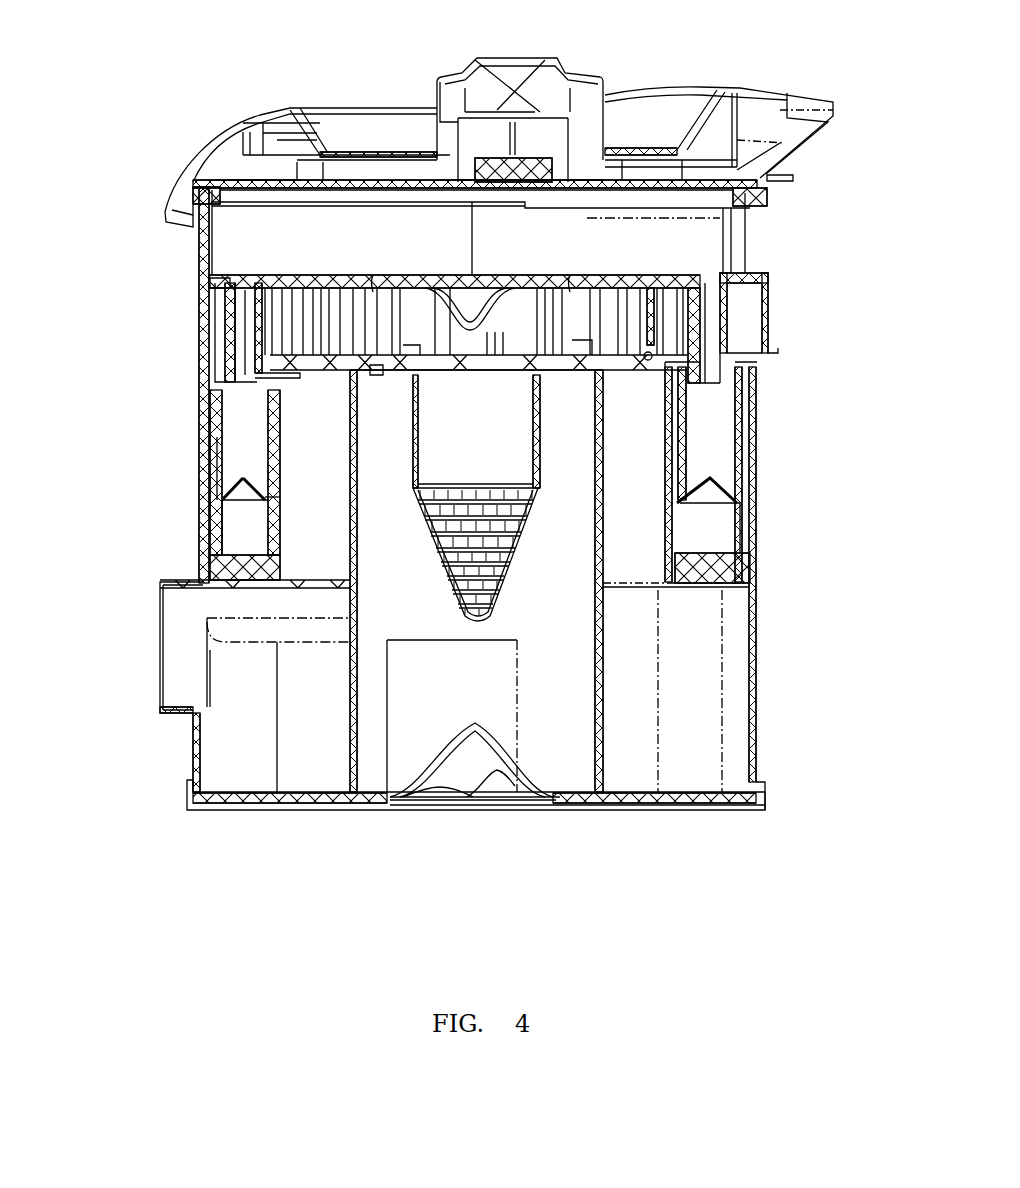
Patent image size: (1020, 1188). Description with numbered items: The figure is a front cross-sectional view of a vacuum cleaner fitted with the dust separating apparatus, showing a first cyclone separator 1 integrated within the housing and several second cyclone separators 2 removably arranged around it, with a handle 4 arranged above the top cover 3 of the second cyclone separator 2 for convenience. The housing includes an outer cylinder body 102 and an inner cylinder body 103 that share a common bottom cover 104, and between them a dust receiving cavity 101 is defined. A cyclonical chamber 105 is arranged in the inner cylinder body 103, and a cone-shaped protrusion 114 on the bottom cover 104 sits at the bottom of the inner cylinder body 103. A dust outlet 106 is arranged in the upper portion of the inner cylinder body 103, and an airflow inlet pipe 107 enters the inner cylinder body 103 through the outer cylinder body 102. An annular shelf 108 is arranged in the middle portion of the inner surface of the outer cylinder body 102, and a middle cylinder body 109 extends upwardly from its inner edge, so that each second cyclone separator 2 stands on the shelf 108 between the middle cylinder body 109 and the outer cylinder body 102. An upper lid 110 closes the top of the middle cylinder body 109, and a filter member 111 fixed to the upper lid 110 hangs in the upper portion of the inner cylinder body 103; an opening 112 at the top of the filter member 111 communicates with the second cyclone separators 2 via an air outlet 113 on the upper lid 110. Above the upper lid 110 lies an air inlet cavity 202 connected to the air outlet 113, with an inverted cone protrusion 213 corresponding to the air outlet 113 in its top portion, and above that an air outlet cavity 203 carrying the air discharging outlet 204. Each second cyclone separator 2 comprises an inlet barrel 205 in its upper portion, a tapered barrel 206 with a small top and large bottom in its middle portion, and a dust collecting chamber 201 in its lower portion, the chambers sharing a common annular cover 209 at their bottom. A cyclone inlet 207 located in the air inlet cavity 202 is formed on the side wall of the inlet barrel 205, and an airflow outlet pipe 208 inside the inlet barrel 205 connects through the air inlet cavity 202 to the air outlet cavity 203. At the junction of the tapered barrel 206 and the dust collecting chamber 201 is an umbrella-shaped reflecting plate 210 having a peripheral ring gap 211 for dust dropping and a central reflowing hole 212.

The first cyclone separator 1 is at (756, 643).
The second cyclone separator 2 is at (218, 393).
The top cover 3 is at (757, 190).
The handle 4 is at (573, 73).
The dust receiving cavity 101 is at (645, 743).
The outer cylinder body 102 is at (756, 762).
The inner cylinder body 103 is at (600, 718).
The bottom cover 104 is at (695, 808).
The cyclonical chamber 105 is at (580, 637).
The dust outlet 106 is at (640, 413).
The airflow inlet pipe 107 is at (183, 670).
The annular shelf 108 is at (745, 589).
The middle cylinder body 109 is at (680, 467).
The upper lid 110 is at (648, 358).
The filter member 111 is at (527, 518).
The opening 112 is at (485, 378).
The air outlet 113 is at (457, 368).
The cone-shaped protrusion 114 is at (500, 747).
The dust collecting chamber 201 is at (218, 537).
The air inlet cavity 202 is at (325, 305).
The air outlet cavity 203 is at (278, 217).
The air discharging outlet 204 is at (727, 222).
The inlet barrel 205 is at (218, 340).
The tapered barrel 206 is at (218, 457).
The cyclone inlet 207 is at (218, 313).
The airflow outlet pipe 208 is at (218, 365).
The annular cover 209 is at (240, 568).
The umbrella-shaped reflecting plate 210 is at (260, 490).
The ring gap 211 is at (277, 495).
The reflowing hole 212 is at (245, 478).
The inverted cone protrusion 213 is at (460, 358).